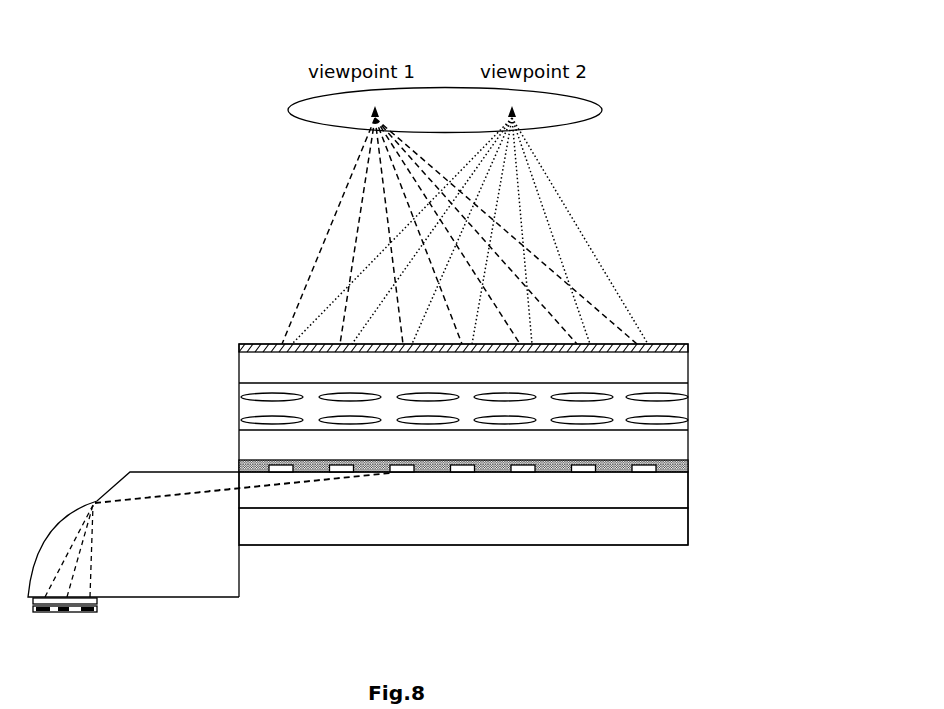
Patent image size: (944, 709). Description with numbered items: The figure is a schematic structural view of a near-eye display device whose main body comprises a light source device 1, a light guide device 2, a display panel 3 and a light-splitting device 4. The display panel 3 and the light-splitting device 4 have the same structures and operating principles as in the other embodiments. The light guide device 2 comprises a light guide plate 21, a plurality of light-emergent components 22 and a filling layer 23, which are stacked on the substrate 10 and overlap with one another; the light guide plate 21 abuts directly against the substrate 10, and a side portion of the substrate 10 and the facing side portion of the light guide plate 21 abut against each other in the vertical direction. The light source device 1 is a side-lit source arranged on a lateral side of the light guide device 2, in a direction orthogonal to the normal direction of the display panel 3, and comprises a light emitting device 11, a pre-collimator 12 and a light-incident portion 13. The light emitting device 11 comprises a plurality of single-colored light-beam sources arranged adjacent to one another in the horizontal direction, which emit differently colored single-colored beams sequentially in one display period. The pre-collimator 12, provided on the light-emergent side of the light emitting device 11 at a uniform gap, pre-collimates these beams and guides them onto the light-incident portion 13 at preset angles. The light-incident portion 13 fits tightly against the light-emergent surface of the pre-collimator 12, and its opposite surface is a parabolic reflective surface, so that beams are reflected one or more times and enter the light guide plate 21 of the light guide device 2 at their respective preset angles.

The light source device 1 is at (209, 531).
The light guide device 2 is at (332, 509).
The display panel 3 is at (238, 415).
The light-splitting device 4 is at (270, 343).
The substrate 10 is at (348, 527).
The light emitting device 11 is at (38, 610).
The pre-collimator 12 is at (97, 600).
The light-incident portion 13 is at (162, 582).
The light guide plate 21 is at (422, 495).
The light-emergent components 22 is at (590, 470).
The filling layer 23 is at (500, 472).